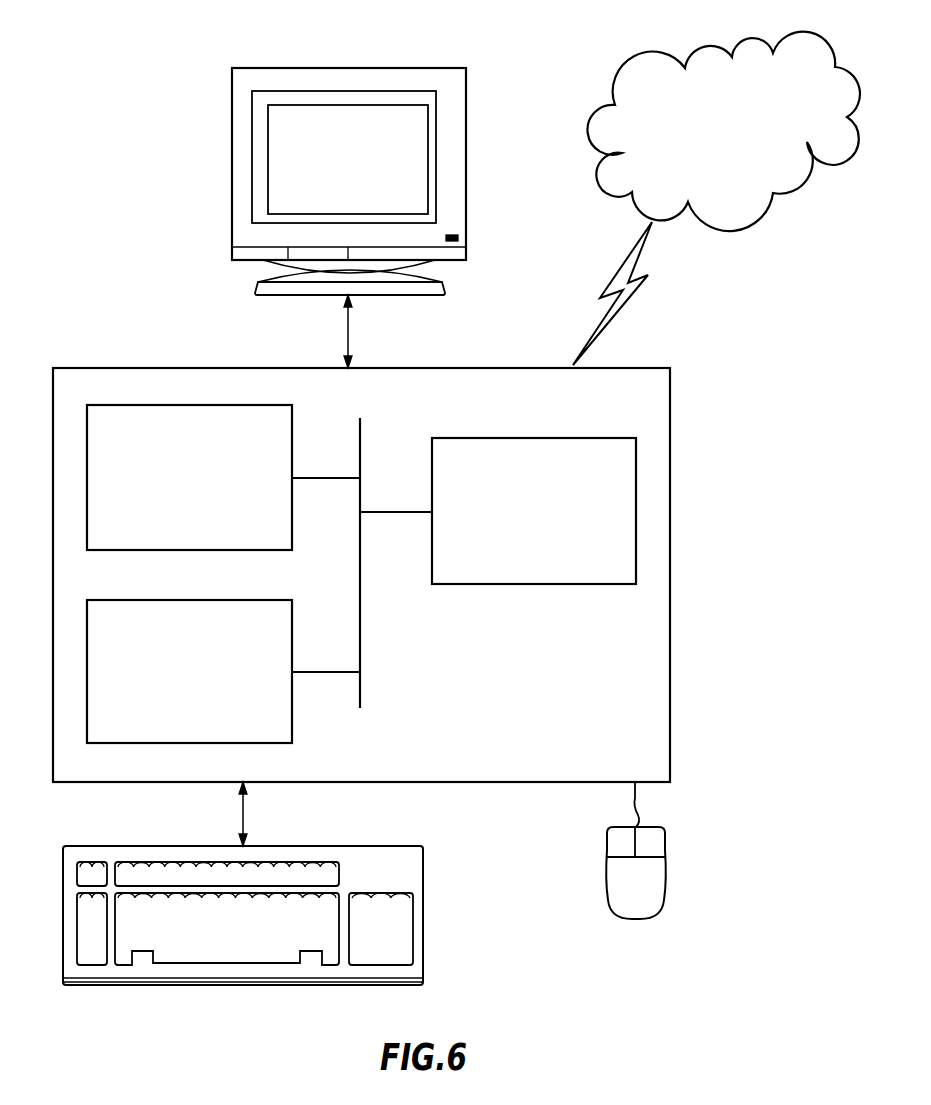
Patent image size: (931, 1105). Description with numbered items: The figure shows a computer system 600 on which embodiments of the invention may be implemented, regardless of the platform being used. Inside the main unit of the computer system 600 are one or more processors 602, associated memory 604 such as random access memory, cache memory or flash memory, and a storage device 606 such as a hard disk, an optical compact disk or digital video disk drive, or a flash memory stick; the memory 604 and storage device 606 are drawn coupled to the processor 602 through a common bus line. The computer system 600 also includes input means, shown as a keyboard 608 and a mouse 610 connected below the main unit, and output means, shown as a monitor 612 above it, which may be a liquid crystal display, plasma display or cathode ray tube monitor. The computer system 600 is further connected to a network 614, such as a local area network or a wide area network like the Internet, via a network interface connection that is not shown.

The computer system 600 is at (162, 227).
The processor 602 is at (548, 528).
The memory 604 is at (203, 497).
The storage device 606 is at (203, 690).
The keyboard 608 is at (253, 950).
The mouse 610 is at (666, 867).
The monitor 612 is at (369, 170).
The network 614 is at (758, 152).